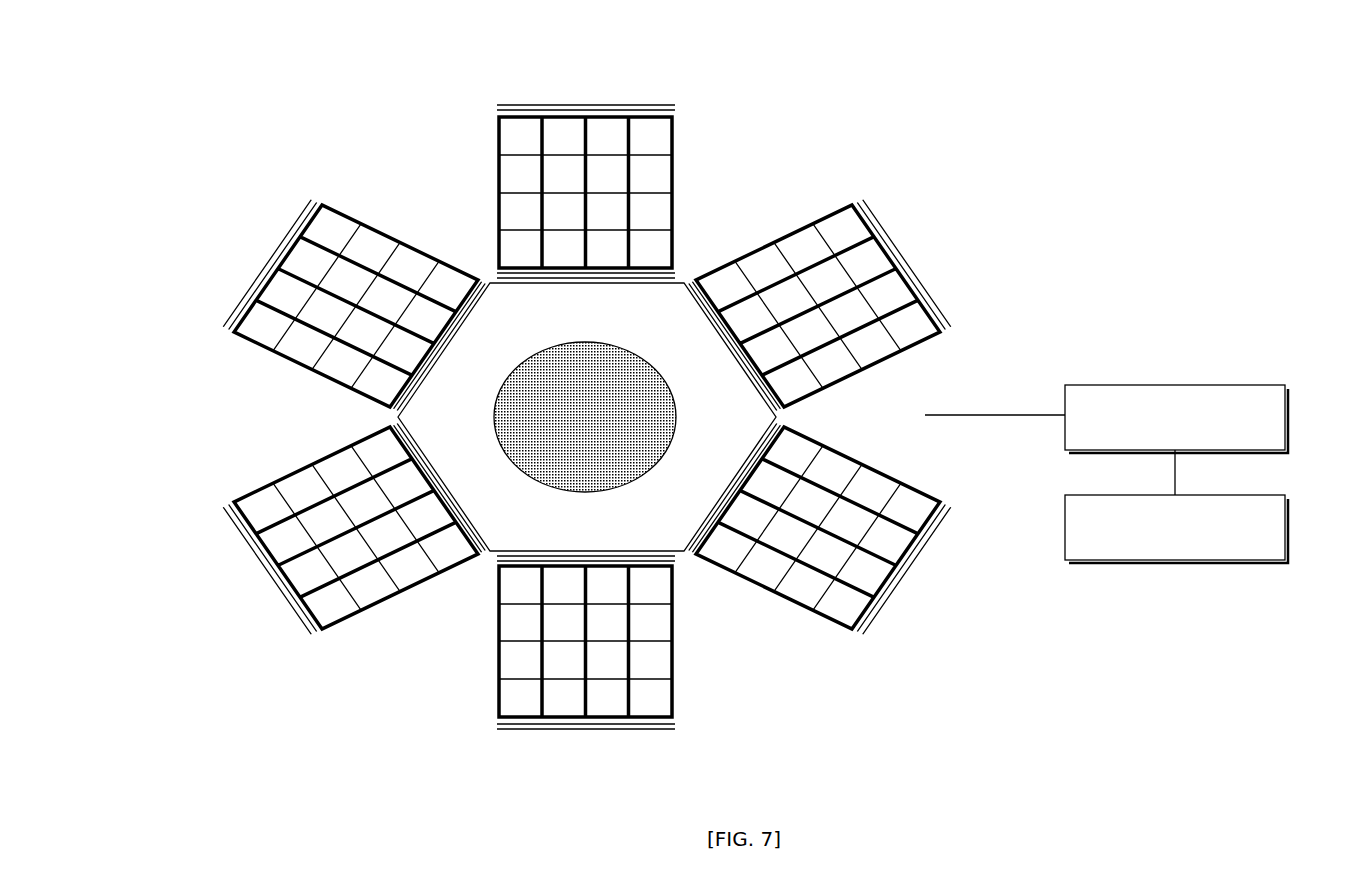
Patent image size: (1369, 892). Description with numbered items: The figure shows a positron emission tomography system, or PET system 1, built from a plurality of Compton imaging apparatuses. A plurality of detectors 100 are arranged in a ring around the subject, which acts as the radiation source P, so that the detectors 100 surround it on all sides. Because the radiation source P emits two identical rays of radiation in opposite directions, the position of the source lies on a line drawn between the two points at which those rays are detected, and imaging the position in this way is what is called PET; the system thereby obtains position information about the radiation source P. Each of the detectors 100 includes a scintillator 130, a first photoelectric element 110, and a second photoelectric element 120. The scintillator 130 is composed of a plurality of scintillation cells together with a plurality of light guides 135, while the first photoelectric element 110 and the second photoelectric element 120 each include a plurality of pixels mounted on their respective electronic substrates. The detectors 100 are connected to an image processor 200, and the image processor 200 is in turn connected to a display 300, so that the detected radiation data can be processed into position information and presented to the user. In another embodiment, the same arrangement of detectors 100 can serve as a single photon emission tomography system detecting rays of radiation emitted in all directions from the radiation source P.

The PET system 1 is at (223, 93).
The detector 100 is at (694, 63).
The first photoelectric element 110 is at (520, 266).
The second photoelectric element 120 is at (562, 107).
The scintillator 130 is at (613, 130).
The light guide 135 is at (677, 127).
The radiation source P is at (510, 418).
The image processor 200 is at (1232, 384).
The display 300 is at (1232, 494).